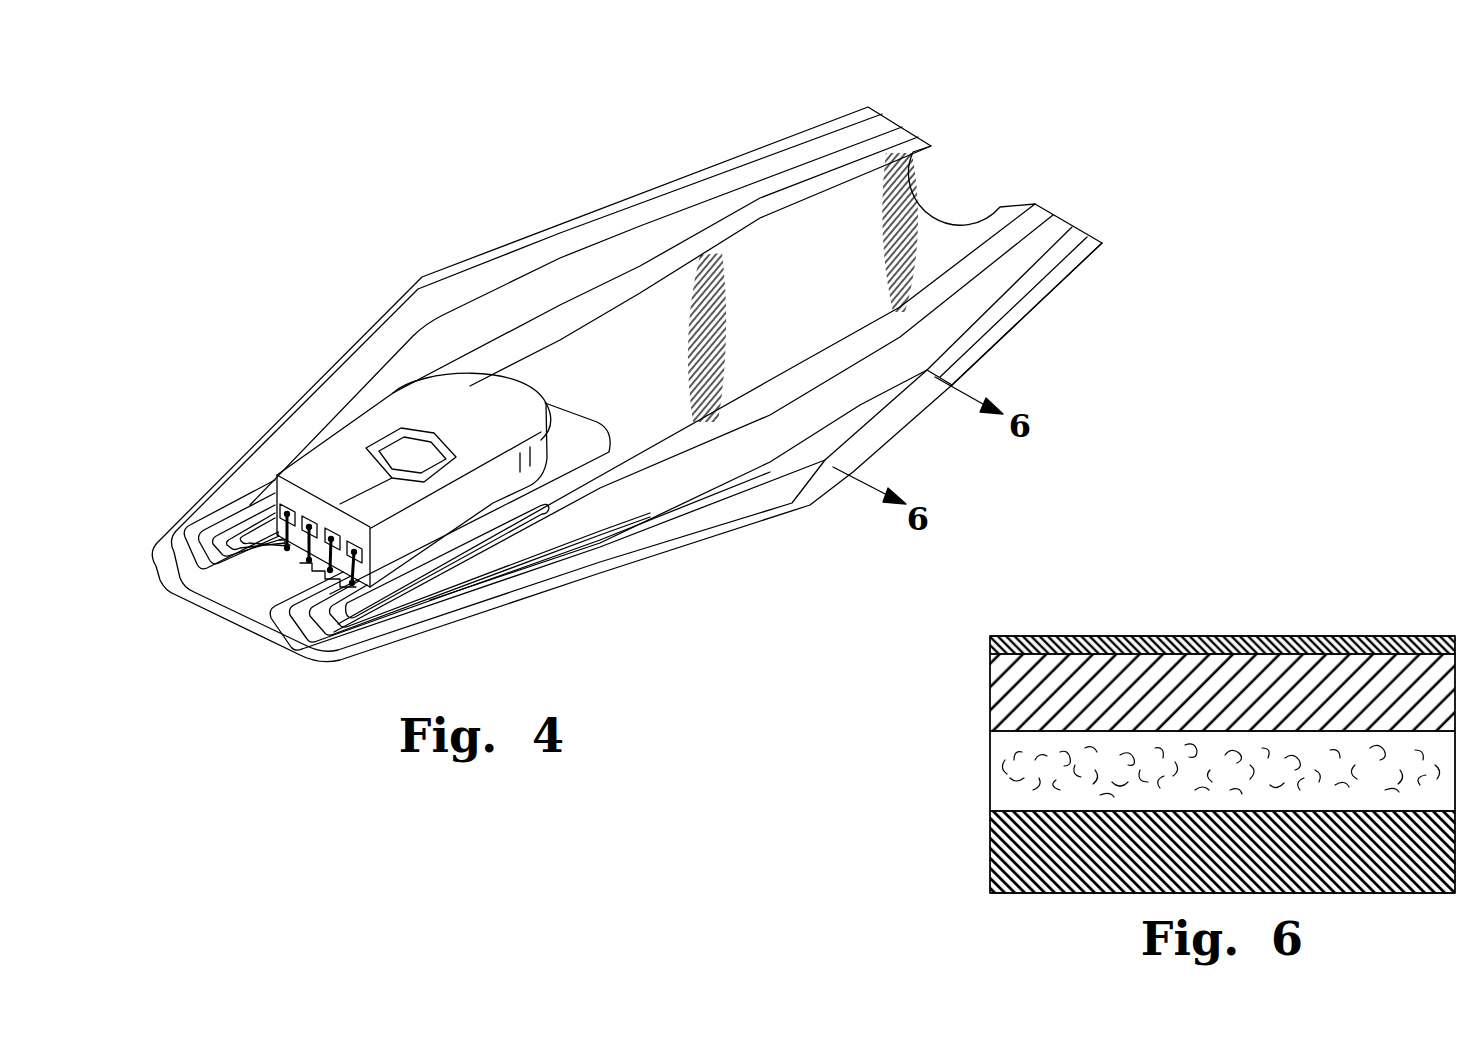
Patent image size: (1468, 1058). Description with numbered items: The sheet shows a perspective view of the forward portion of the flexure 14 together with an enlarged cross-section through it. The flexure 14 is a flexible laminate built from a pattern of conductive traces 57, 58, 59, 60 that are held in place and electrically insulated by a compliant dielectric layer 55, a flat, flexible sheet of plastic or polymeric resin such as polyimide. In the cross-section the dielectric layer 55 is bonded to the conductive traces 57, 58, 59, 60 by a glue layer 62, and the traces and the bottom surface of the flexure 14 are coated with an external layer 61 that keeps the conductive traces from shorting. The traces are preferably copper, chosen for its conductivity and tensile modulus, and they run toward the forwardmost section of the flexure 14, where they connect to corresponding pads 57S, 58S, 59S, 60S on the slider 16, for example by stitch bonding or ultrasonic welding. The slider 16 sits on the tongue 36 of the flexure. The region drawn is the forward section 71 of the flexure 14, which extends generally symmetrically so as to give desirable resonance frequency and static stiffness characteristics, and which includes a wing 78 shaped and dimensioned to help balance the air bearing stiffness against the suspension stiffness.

In FIG. 4, the flexure 14 is at (572, 186).
In FIG. 6, the flexure 14 is at (1052, 624).
In FIG. 4, the slider 16 is at (341, 456).
In FIG. 4, the tongue 36 is at (490, 523).
In FIG. 4, the dielectric layer 55 is at (940, 226).
In FIG. 6, the dielectric layer 55 is at (988, 847).
In FIG. 4, the conductive trace 57 is at (726, 173).
In FIG. 4, the conductive trace 58 is at (833, 170).
In FIG. 4, the conductive trace 59 is at (1016, 247).
In FIG. 4, the conductive trace 60 is at (1062, 266).
In FIG. 6, the conductive trace 60 is at (1000, 680).
In FIG. 6, the external layer 61 is at (988, 647).
In FIG. 6, the glue layer 62 is at (988, 772).
In FIG. 4, the forward section 71 is at (478, 250).
In FIG. 4, the wing 78 is at (680, 556).
In FIG. 4, the pad 57S is at (310, 522).
In FIG. 4, the pad 58S is at (282, 538).
In FIG. 4, the pad 59S is at (352, 565).
In FIG. 4, the pad 60S is at (356, 550).